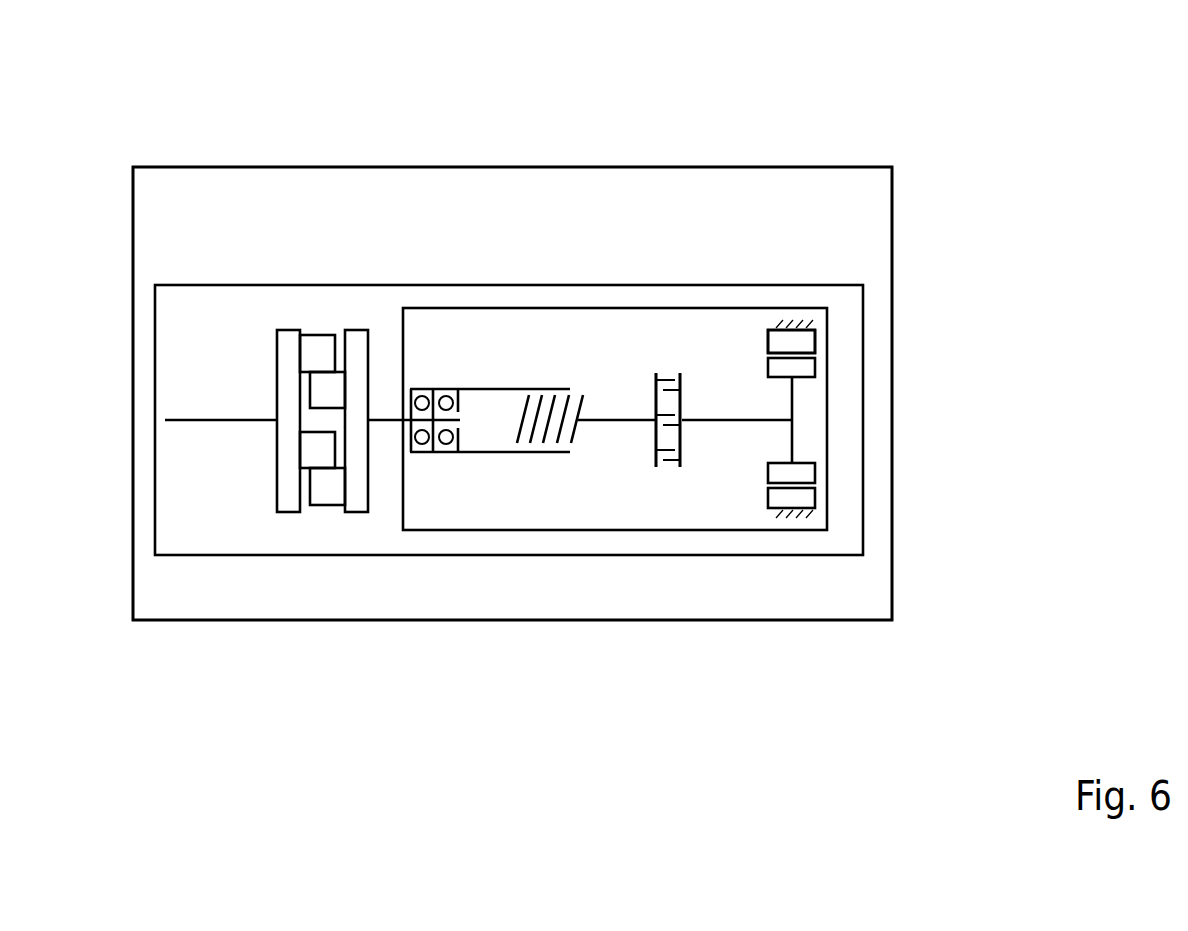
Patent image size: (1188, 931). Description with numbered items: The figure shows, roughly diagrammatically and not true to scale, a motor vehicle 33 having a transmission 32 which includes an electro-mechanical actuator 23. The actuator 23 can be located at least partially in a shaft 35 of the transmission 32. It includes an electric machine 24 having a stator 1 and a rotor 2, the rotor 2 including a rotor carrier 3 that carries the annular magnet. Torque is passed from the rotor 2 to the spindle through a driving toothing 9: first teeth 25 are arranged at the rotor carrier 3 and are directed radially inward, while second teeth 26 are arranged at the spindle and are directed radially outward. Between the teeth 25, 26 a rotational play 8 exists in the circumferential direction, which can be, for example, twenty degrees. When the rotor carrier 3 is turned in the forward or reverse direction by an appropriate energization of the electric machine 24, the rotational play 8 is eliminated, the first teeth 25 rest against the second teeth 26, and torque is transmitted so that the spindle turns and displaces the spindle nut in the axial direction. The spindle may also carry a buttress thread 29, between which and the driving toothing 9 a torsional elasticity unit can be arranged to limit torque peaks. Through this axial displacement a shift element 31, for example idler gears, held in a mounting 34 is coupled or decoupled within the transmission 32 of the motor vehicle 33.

The stator 1 is at (797, 340).
The rotor 2 is at (802, 368).
The rotor carrier 3 is at (682, 437).
The rotational play 8 is at (660, 440).
The driving toothing 9 is at (662, 472).
The electro-mechanical actuator 23 is at (602, 506).
The electric machine 24 is at (838, 352).
The first teeth 25 is at (672, 463).
The second teeth 26 is at (657, 373).
The buttress thread 29 is at (522, 420).
The shift element 31 is at (363, 313).
The transmission 32 is at (586, 250).
The motor vehicle 33 is at (347, 630).
The mounting 34 is at (441, 386).
The shaft 35 is at (325, 285).